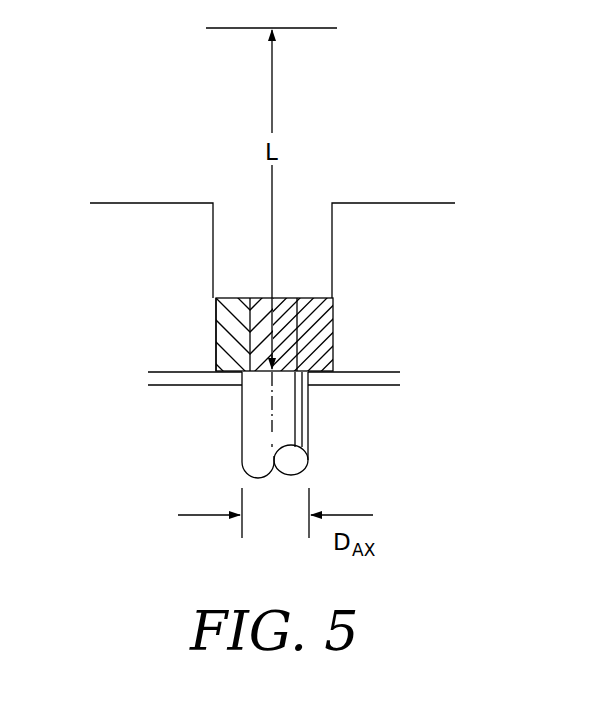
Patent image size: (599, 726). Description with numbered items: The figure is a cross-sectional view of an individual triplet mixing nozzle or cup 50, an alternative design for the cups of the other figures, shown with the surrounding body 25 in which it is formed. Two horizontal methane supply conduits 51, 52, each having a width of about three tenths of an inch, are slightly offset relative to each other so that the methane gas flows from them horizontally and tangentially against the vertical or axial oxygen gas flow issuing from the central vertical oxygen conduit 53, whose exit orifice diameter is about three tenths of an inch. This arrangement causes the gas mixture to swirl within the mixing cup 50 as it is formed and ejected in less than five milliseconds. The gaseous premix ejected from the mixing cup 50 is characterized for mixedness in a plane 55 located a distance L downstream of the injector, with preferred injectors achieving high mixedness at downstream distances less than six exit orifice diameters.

The connector body 25 is at (147, 202).
The triplet mixing nozzle or cup 50 is at (293, 200).
The horizontal methane supply conduit 51 is at (327, 327).
The horizontal methane supply conduit 52 is at (218, 335).
The central vertical oxygen conduit 53 is at (300, 420).
The plane 55 is at (347, 28).